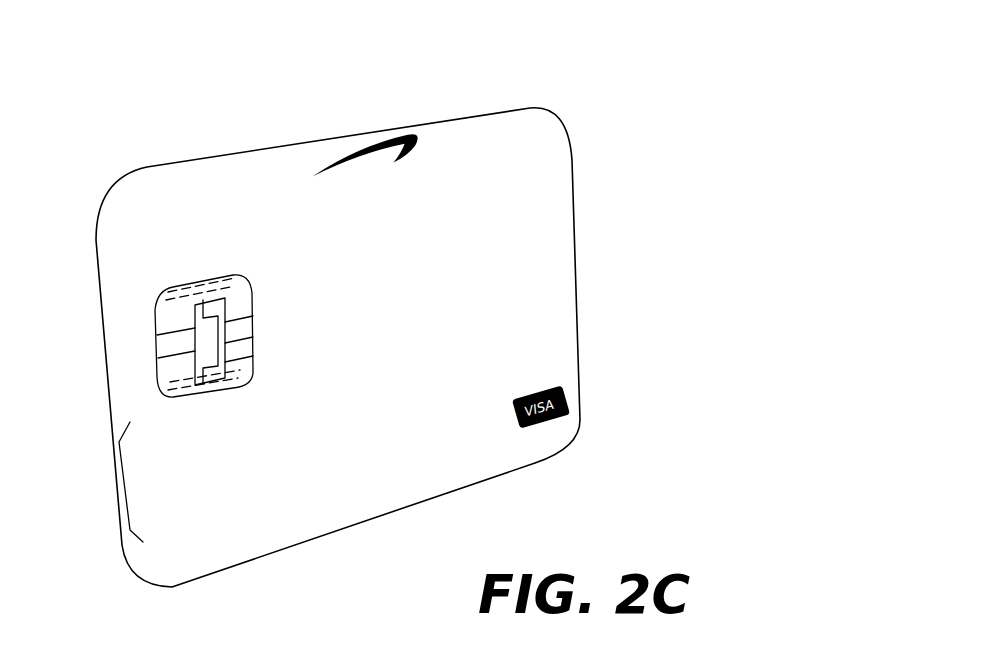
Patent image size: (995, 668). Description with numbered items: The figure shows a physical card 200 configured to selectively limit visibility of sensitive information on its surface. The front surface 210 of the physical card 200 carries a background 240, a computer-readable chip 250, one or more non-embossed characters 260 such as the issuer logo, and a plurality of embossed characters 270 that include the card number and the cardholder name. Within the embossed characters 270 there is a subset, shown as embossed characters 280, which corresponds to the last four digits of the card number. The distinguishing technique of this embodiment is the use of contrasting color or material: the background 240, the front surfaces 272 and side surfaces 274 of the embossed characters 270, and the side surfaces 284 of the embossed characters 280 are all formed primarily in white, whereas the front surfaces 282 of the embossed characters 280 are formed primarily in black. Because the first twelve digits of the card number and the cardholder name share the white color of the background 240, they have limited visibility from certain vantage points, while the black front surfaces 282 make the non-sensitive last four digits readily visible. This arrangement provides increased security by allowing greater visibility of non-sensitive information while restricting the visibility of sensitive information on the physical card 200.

The physical card 200 is at (572, 78).
The front surface 210 is at (192, 170).
The background 240 is at (470, 290).
The computer-readable chip 250 is at (155, 322).
The non-embossed characters 260 is at (382, 153).
The embossed characters 270 is at (336, 368).
The front surfaces of embossed characters 272 is at (385, 470).
The side surfaces of embossed characters 274 is at (288, 492).
The embossed characters (subset) 280 is at (461, 332).
The front surfaces of embossed characters 280 282 is at (546, 345).
The side surfaces of embossed characters 280 284 is at (470, 360).